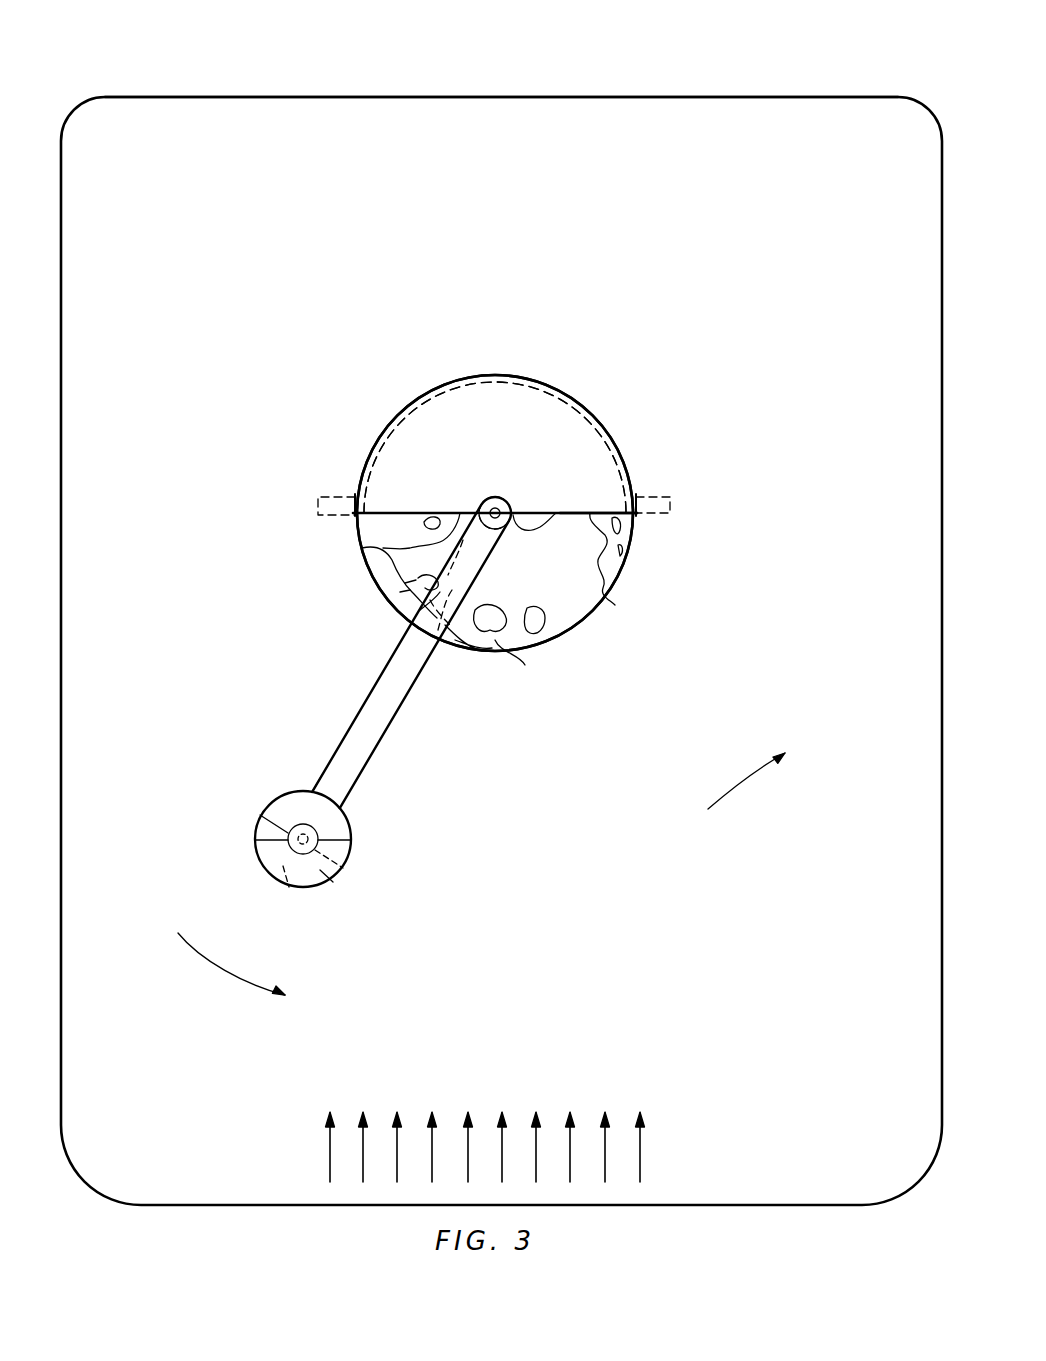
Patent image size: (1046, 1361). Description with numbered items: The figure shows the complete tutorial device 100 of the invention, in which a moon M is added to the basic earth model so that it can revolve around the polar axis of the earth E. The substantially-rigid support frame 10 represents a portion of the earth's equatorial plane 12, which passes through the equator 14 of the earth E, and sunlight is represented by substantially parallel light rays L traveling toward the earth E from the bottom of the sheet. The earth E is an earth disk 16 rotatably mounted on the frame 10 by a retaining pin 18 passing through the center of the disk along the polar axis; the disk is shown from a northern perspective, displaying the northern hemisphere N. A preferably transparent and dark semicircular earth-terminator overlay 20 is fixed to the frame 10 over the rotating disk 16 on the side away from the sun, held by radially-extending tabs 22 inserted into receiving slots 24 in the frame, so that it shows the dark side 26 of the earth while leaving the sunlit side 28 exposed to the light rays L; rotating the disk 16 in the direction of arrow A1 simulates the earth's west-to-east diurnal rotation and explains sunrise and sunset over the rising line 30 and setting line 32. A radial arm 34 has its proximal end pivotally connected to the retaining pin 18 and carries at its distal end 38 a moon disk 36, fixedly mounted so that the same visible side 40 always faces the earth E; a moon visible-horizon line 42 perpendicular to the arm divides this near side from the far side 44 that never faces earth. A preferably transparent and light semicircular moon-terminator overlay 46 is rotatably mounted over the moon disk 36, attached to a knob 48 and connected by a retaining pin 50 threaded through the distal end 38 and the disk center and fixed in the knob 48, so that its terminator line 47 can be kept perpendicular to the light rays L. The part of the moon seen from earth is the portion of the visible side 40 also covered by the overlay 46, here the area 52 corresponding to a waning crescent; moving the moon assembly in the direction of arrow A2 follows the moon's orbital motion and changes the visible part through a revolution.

The tutorial device 100 is at (520, 75).
The support frame 10 is at (692, 95).
The equatorial plane 12 is at (468, 915).
The equator 14 is at (580, 628).
The earth disk 16 is at (407, 418).
The retaining pin 18 is at (504, 505).
The earth-terminator overlay 20 is at (567, 393).
The tabs 22 is at (318, 505).
The receiving slots 24 is at (352, 495).
The dark side 26 is at (513, 410).
The sunlit side 28 is at (515, 640).
The rising line 30 is at (352, 515).
The setting line 32 is at (635, 517).
The radial arm 34 is at (392, 710).
The moon disk 36 is at (298, 790).
The distal end 38 is at (313, 790).
The visible side 40 is at (280, 807).
The moon visible-horizon line 42 is at (255, 830).
The far side 44 is at (288, 890).
The moon-terminator overlay 46 is at (327, 878).
The terminator line 47 is at (340, 837).
The knob 48 is at (287, 848).
The retaining pin 50 is at (493, 498).
The area 52 is at (340, 853).
The northern hemisphere N is at (420, 610).
The moon M is at (355, 815).
The earth E is at (651, 607).
The arrow A1 is at (748, 785).
The arrow A2 is at (203, 962).
The light rays L is at (640, 1150).